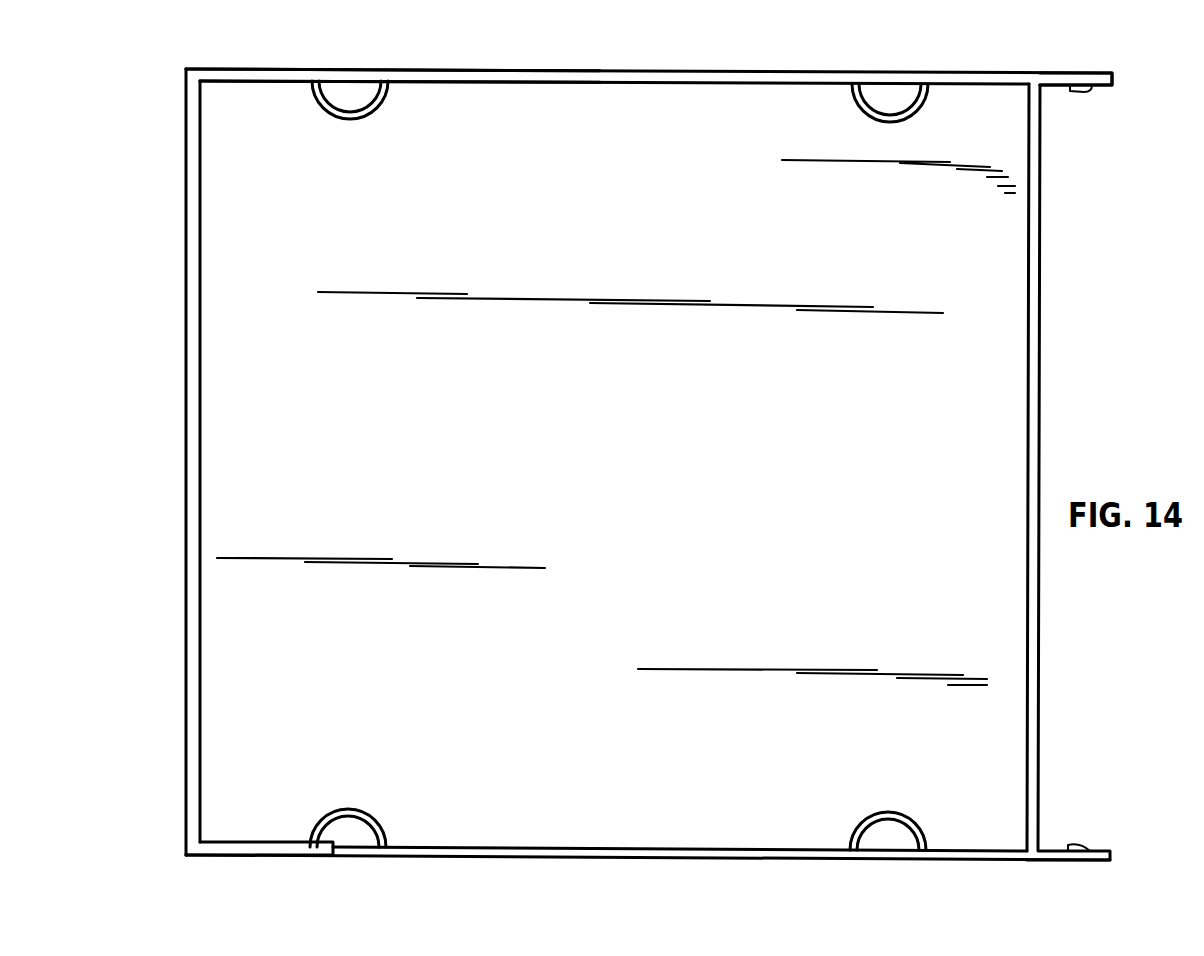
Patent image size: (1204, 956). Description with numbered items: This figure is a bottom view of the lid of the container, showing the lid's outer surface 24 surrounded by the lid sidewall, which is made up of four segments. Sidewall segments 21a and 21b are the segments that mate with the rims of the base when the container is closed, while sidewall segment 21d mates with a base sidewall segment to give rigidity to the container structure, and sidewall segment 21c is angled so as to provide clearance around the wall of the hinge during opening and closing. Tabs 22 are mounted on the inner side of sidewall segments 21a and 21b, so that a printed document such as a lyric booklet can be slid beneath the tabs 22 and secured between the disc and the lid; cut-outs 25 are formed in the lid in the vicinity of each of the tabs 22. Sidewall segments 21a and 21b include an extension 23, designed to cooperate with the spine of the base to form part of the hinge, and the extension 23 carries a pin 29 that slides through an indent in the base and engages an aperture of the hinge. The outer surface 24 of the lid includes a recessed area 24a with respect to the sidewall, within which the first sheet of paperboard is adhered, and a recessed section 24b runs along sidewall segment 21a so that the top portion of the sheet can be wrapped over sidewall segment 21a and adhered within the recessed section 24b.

The lid sidewall segment 21a is at (281, 856).
The lid sidewall segment 21b is at (529, 68).
The lid sidewall segment 21c is at (1038, 696).
The lid sidewall segment 21d is at (183, 486).
The tab 22 is at (361, 828).
The extension 23 is at (1095, 73).
The outer surface 24 is at (597, 492).
The recessed area 24a is at (693, 100).
The recessed section 24b is at (615, 858).
The cut-out 25 is at (912, 823).
The pin 29 is at (1090, 93).